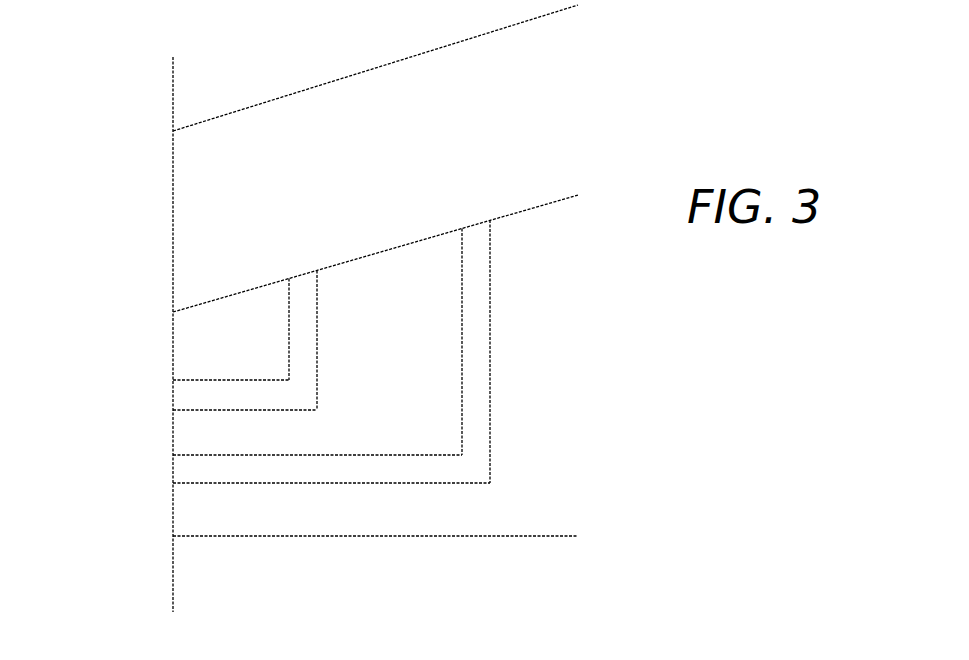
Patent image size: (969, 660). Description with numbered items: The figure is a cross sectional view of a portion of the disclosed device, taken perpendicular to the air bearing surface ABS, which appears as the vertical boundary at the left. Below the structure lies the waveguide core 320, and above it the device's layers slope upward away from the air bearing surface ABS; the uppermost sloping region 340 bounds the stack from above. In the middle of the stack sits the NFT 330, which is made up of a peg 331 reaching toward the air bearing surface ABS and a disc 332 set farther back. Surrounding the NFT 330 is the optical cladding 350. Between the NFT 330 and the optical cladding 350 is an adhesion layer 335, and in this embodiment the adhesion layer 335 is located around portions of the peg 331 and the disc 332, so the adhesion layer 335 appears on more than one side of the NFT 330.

The air bearing surface ABS is at (158, 264).
The waveguide core 320 is at (307, 606).
The NFT 330 is at (417, 394).
The peg 331 is at (216, 439).
The disc 332 is at (414, 313).
The adhesion layer 335 is at (213, 391).
The upper magnetic layer / shield 340 is at (417, 120).
The optical cladding 350 is at (555, 376).